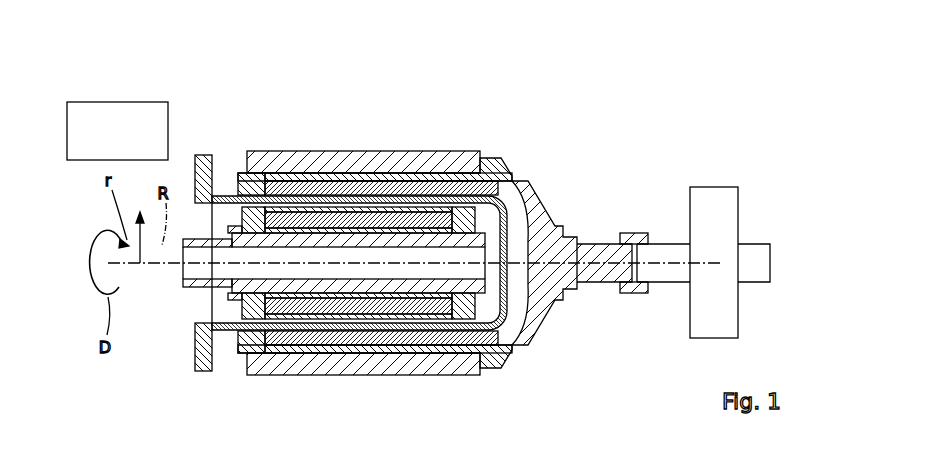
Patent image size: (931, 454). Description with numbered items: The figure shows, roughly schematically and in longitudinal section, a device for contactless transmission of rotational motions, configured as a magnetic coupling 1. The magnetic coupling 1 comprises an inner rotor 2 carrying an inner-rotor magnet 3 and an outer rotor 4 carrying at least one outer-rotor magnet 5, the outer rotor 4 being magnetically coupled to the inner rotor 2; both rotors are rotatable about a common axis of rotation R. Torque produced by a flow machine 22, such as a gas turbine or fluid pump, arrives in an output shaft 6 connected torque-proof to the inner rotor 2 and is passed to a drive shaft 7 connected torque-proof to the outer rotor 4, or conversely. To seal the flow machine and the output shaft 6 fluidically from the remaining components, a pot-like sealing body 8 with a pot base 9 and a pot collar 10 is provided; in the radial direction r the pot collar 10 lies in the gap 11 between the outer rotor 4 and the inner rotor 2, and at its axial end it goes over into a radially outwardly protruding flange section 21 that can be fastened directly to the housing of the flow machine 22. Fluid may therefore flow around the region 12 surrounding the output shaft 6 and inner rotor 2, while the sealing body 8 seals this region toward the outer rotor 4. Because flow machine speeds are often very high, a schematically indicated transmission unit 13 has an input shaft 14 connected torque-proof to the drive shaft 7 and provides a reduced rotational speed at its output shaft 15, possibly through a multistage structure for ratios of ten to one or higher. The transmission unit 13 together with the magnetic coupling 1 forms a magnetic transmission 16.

The magnetic coupling 1 is at (410, 223).
The inner rotor 2 is at (505, 313).
The inner-rotor magnet 3 is at (437, 308).
The outer rotor 4 is at (457, 160).
The outer-rotor magnet 5 is at (427, 183).
The output shaft 6 is at (217, 287).
The drive shaft 7 is at (588, 250).
The sealing body 8 is at (375, 234).
The pot base 9 is at (497, 293).
The pot collar 10 is at (293, 177).
The gap 11 is at (387, 193).
The region around the output shaft 12 is at (199, 225).
The transmission unit 13 is at (717, 165).
The input shaft 14 is at (662, 252).
The output shaft 15 is at (753, 252).
The magnetic transmission 16 is at (660, 115).
The flange section 21 is at (203, 158).
The flow machine 22 is at (108, 121).